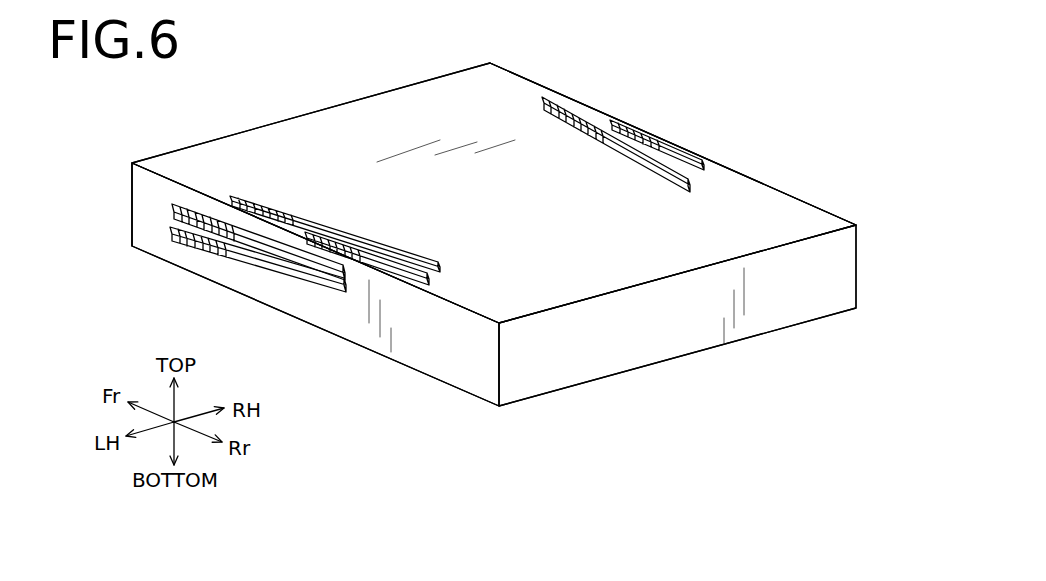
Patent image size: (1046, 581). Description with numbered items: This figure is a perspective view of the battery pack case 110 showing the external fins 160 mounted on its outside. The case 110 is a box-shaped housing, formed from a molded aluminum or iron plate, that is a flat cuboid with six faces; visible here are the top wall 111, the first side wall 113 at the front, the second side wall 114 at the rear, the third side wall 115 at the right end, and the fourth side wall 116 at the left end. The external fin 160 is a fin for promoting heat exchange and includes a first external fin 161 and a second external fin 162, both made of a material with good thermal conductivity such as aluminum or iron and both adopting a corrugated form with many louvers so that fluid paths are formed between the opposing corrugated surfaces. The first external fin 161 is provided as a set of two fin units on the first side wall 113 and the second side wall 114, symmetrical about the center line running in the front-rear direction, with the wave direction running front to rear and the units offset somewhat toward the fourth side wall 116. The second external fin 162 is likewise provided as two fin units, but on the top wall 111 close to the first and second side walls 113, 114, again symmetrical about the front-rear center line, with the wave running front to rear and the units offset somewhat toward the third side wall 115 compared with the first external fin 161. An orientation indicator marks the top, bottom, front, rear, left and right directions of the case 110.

The case 110 is at (458, 72).
The top wall 111 is at (363, 120).
The first side wall 113 is at (323, 312).
The second side wall 114 is at (528, 80).
The third side wall 115 is at (673, 338).
The fourth side wall 116 is at (125, 178).
The external fin 160 is at (467, 214).
The first external fin 161 is at (243, 252).
The second external fin 162 is at (378, 257).